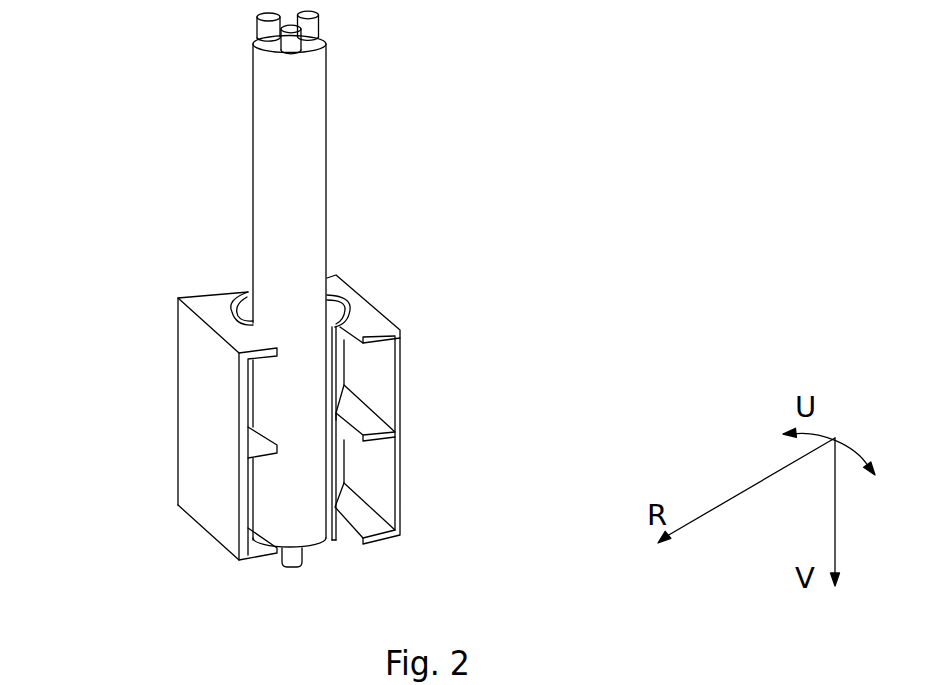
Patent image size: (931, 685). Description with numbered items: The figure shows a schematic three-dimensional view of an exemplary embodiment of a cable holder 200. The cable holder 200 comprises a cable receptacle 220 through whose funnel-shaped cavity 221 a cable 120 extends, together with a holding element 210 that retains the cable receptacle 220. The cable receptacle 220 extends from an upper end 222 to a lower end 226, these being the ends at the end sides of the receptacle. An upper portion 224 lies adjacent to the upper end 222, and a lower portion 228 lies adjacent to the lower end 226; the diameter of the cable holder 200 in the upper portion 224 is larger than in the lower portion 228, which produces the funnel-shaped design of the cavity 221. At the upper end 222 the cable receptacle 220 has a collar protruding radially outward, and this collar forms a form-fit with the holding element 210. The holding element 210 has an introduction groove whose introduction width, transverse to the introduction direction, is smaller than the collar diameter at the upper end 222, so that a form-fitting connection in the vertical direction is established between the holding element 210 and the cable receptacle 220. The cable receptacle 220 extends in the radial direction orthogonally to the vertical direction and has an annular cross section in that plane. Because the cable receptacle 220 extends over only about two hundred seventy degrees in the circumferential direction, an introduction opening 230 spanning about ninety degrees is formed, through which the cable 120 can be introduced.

The cable holder 200 is at (155, 110).
The cable 120 is at (310, 90).
The holding element 210 is at (372, 323).
The cable receptacle 220 is at (342, 292).
The funnel-shaped cavity 221 is at (340, 298).
The upper end 222 is at (236, 280).
The upper portion 224 is at (358, 370).
The lower end 226 is at (340, 547).
The lower portion 228 is at (342, 507).
The introduction opening 230 is at (349, 444).